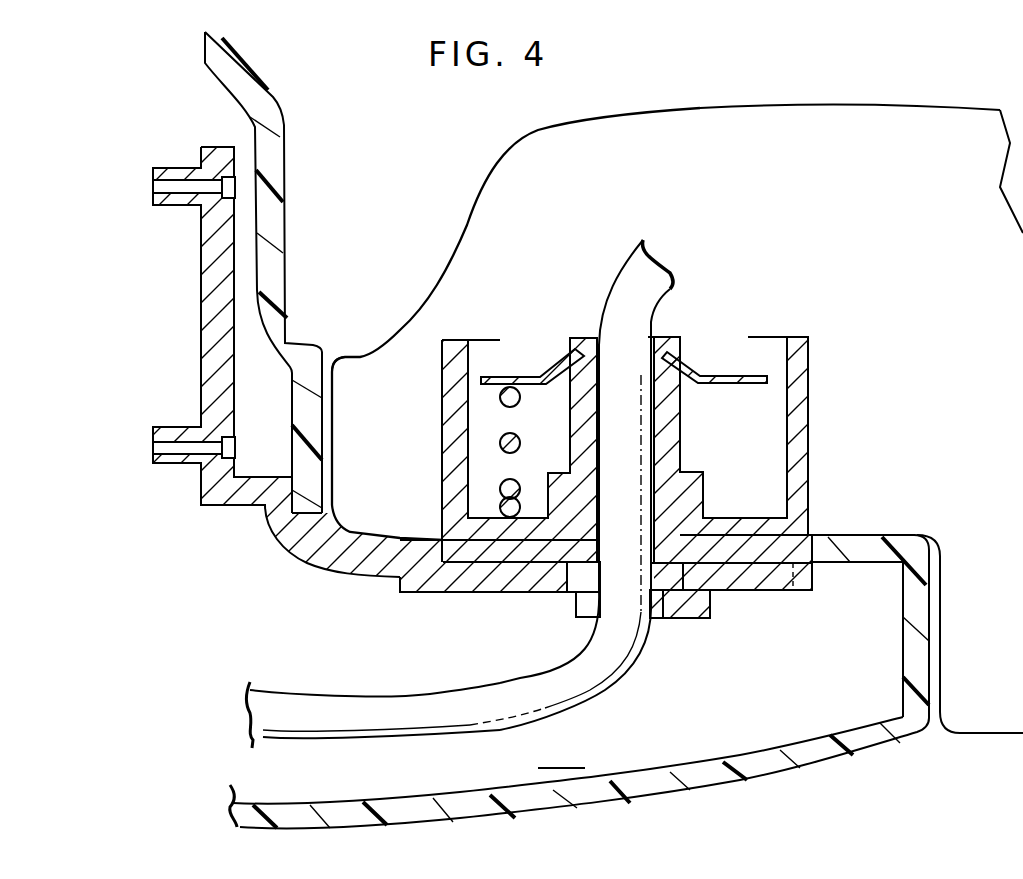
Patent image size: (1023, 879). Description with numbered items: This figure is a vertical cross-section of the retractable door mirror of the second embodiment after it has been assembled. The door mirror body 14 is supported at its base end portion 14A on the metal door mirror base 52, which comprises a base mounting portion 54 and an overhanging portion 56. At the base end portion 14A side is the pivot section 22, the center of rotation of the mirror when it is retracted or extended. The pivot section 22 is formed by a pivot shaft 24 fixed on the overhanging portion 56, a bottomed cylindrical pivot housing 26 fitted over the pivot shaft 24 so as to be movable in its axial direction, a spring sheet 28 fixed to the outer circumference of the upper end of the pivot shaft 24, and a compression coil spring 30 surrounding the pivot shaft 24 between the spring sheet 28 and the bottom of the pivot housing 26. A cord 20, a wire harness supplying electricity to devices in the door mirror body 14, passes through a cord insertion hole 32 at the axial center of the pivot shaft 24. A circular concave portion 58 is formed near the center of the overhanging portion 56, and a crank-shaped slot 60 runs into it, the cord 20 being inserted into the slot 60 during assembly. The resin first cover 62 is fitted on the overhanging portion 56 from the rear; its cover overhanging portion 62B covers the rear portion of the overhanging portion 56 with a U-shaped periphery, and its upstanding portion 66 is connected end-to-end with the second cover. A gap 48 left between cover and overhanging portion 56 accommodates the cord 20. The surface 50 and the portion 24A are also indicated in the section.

The door mirror body 14 is at (830, 105).
The base end portion 14A is at (368, 357).
The cord 20 is at (317, 703).
The pivot section 22 is at (690, 353).
The pivot shaft 24 is at (582, 337).
The terminal lead portion 24A is at (540, 588).
The pivot housing 26 is at (797, 450).
The spring sheet 28 is at (527, 373).
The compression coil spring 30 is at (507, 450).
The cord insertion hole 32 is at (614, 395).
The gap 48 is at (561, 751).
The lens outer surface 50 is at (740, 100).
The door mirror base 52 is at (209, 508).
The base mounting portion 54 is at (233, 278).
The overhanging portion 56 is at (435, 582).
The concave portion 58 is at (667, 592).
The slot 60 is at (587, 573).
The first cover 62 is at (505, 817).
The cover overhanging portion 62B is at (590, 800).
The upstanding portion 66 is at (917, 653).